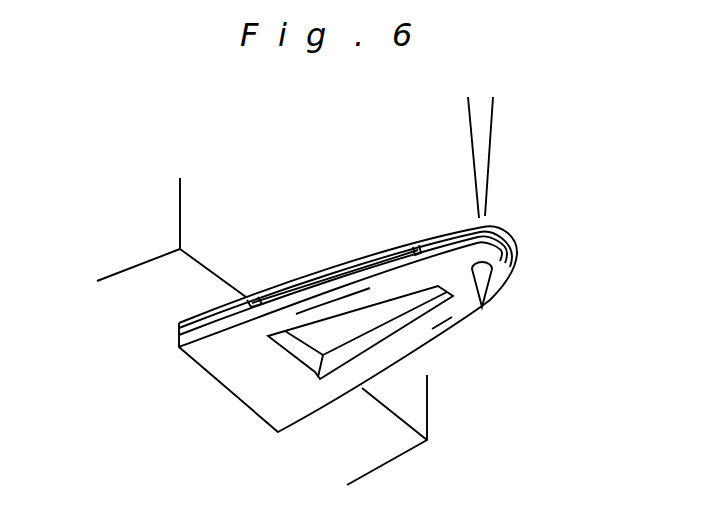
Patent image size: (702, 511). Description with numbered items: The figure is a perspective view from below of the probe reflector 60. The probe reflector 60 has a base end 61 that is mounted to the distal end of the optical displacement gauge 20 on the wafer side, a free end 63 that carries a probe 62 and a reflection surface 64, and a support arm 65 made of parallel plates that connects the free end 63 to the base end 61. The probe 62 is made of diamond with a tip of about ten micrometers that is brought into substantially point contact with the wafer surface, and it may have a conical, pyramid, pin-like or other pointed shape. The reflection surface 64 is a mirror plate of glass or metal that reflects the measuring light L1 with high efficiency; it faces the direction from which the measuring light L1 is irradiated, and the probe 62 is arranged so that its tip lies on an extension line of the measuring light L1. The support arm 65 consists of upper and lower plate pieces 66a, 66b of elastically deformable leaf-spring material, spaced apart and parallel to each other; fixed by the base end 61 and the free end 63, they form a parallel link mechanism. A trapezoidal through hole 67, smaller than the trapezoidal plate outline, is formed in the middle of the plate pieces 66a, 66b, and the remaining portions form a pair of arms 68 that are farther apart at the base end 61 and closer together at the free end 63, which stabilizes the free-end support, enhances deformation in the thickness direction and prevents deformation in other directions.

The optical displacement gauge 20 is at (152, 229).
The probe reflector 60 is at (385, 247).
The base end 61 is at (242, 381).
The probe 62 is at (489, 278).
The free end 63 is at (518, 232).
The reflection surface 64 is at (505, 228).
The support arm 65 is at (313, 273).
The upper plate piece 66a is at (384, 256).
The lower plate piece 66b is at (392, 287).
The through hole 67 is at (381, 337).
The arm 68 is at (296, 316).
The measuring light L1 is at (490, 128).